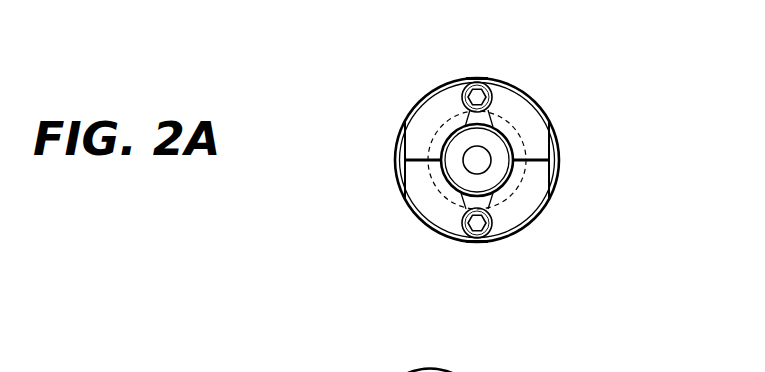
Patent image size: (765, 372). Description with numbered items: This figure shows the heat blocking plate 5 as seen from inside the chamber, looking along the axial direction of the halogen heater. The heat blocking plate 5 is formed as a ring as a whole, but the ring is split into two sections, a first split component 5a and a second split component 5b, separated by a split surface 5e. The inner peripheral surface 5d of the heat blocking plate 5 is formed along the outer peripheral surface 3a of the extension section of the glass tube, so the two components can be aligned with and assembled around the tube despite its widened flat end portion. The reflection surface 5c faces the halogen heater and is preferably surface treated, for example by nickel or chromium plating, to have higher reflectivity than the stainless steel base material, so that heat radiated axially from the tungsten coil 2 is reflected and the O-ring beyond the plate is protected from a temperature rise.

The tungsten coil 2 is at (461, 97).
The outer peripheral surface 3a is at (466, 151).
The heat blocking plate 5 is at (655, 165).
The first split component 5a is at (521, 121).
The second split component 5b is at (526, 183).
The reflection surface 5c is at (434, 124).
The inner peripheral surface 5d is at (461, 152).
The split surface 5e is at (453, 181).